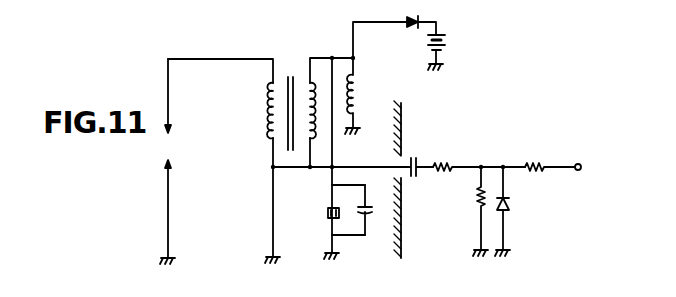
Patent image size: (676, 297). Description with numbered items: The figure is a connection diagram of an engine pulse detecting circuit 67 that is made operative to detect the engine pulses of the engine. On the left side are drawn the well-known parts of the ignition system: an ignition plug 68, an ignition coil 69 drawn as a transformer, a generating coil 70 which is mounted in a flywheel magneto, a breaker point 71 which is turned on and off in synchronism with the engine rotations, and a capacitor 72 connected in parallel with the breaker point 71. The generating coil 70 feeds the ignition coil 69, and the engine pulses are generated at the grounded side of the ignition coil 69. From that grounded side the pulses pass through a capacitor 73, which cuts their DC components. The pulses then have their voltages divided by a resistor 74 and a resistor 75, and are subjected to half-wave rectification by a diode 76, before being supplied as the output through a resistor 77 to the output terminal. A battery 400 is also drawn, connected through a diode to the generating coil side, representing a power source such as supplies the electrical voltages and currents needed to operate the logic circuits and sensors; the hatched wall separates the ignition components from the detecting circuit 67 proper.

The engine pulse detecting circuit 67 is at (478, 118).
The ignition plug 68 is at (172, 151).
The ignition coil 69 is at (291, 60).
The generating coil 70 is at (361, 84).
The breaker point 71 is at (331, 218).
The capacitor 72 is at (373, 215).
The capacitor 73 is at (414, 154).
The resistor 74 is at (449, 154).
The resistor 75 is at (477, 203).
The diode 76 is at (512, 200).
The resistor 77 is at (535, 153).
The power source (battery) 400 is at (415, 39).